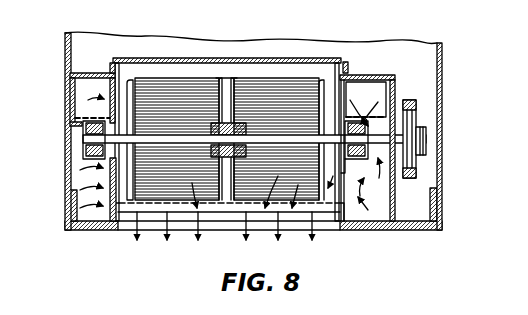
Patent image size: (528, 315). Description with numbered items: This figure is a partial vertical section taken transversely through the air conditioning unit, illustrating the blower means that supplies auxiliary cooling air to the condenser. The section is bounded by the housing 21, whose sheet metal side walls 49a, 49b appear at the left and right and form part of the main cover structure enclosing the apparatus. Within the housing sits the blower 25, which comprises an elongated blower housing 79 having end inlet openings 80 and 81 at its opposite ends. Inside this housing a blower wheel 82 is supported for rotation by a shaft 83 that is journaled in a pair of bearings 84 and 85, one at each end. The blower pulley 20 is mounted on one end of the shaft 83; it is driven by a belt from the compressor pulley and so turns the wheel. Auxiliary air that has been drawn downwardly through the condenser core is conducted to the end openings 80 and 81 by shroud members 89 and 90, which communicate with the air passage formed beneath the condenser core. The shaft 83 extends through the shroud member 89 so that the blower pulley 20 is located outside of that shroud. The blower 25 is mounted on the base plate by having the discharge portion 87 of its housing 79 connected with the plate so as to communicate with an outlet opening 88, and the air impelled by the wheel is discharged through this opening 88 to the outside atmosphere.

The blower pulley 20 is at (417, 110).
The housing 21 is at (439, 75).
The blower 25 is at (157, 56).
The side wall 49a is at (443, 130).
The side wall 49b is at (66, 162).
The blower housing 79 is at (237, 58).
The end inlet opening 80 is at (335, 98).
The end inlet opening 81 is at (111, 88).
The blower wheel 82 is at (287, 87).
The shaft 83 is at (88, 138).
The bearing 84 is at (362, 120).
The bearing 85 is at (88, 118).
The discharge portion 87 is at (344, 210).
The outlet opening 88 is at (147, 233).
The shroud member 89 is at (397, 187).
The shroud member 90 is at (82, 73).